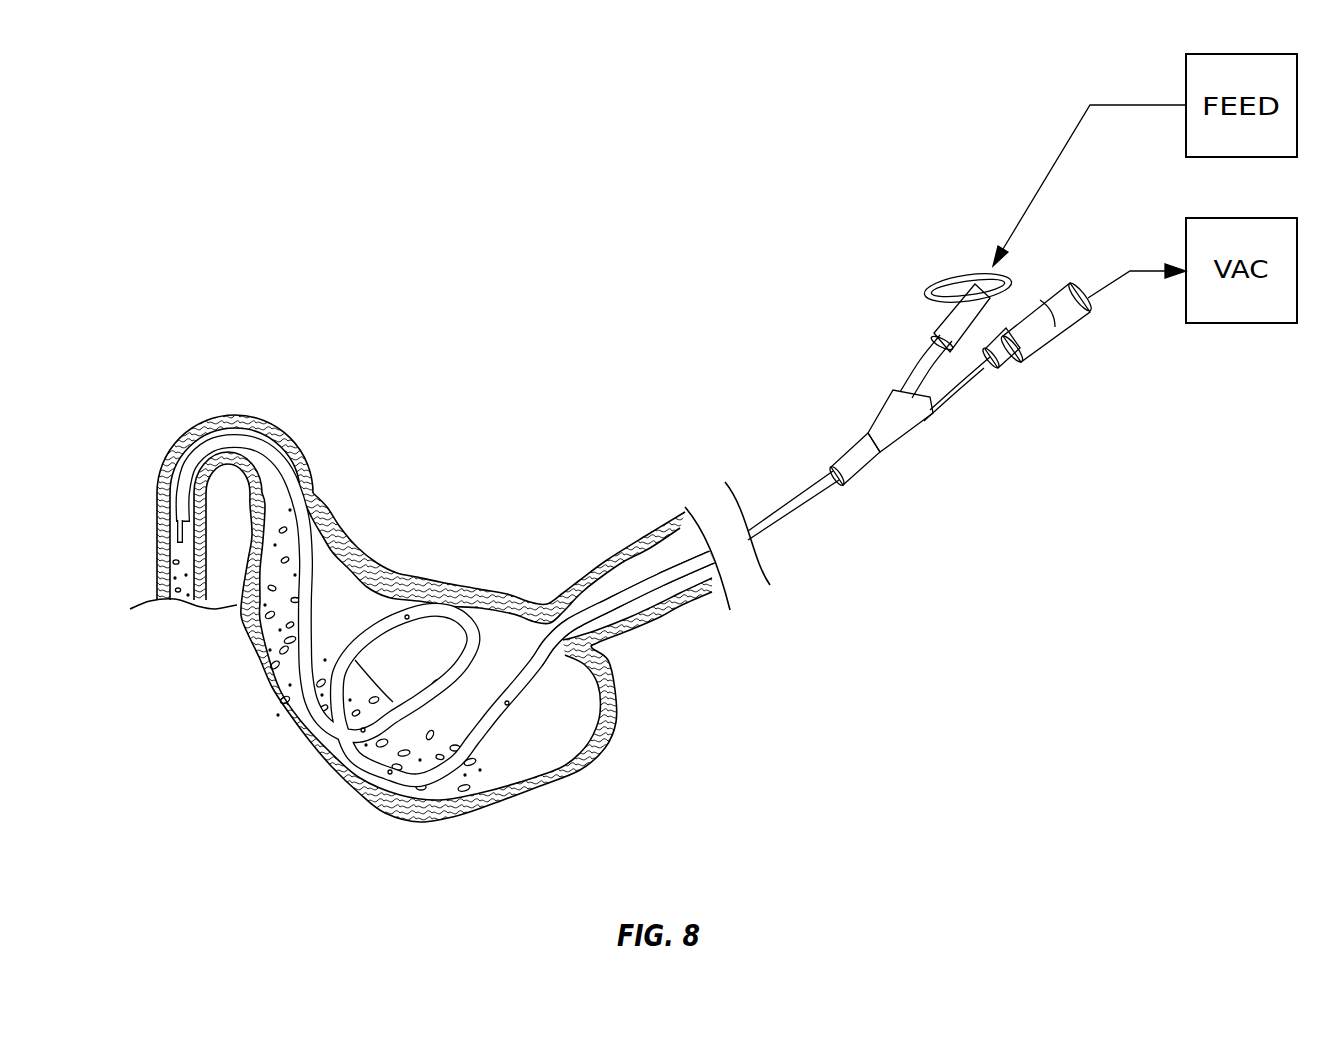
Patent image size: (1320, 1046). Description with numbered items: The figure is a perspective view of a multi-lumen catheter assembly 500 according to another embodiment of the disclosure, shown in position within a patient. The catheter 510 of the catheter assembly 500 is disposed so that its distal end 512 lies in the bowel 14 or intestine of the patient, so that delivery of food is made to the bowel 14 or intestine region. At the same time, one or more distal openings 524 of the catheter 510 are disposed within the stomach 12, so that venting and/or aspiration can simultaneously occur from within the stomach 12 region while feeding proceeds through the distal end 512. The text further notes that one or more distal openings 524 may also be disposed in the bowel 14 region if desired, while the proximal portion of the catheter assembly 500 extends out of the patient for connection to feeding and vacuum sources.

The stomach 12 is at (425, 820).
The bowel 14 is at (167, 480).
The multi-lumen catheter assembly 500 is at (610, 287).
The catheter 510 is at (665, 577).
The distal end 512 is at (176, 533).
The distal openings 524 is at (407, 617).